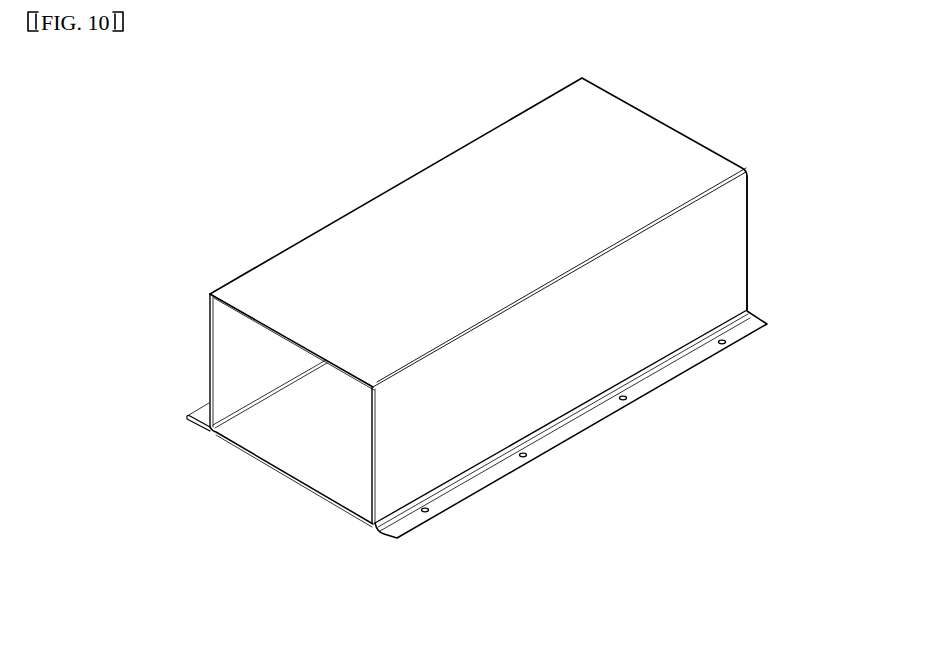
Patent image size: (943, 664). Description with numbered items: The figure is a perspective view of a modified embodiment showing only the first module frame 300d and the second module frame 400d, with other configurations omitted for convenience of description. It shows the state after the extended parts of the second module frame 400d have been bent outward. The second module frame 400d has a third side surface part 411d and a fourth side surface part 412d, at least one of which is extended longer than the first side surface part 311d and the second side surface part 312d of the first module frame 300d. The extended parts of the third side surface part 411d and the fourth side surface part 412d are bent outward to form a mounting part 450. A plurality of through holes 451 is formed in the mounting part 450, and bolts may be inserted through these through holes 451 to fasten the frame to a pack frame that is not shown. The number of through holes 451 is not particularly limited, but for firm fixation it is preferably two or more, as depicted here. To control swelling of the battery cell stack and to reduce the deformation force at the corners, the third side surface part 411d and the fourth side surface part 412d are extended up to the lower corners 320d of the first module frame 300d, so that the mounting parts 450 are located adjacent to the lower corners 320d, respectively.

The second module frame 400d is at (476, 252).
The third side surface part 411d is at (208, 304).
The fourth side surface part 412d is at (727, 250).
The first module frame 300d is at (448, 462).
The first side surface part 311d is at (228, 359).
The second side surface part 312d is at (370, 483).
The lower corners 320d is at (240, 417).
The mounting part 450 is at (190, 417).
The through holes 451 is at (723, 345).